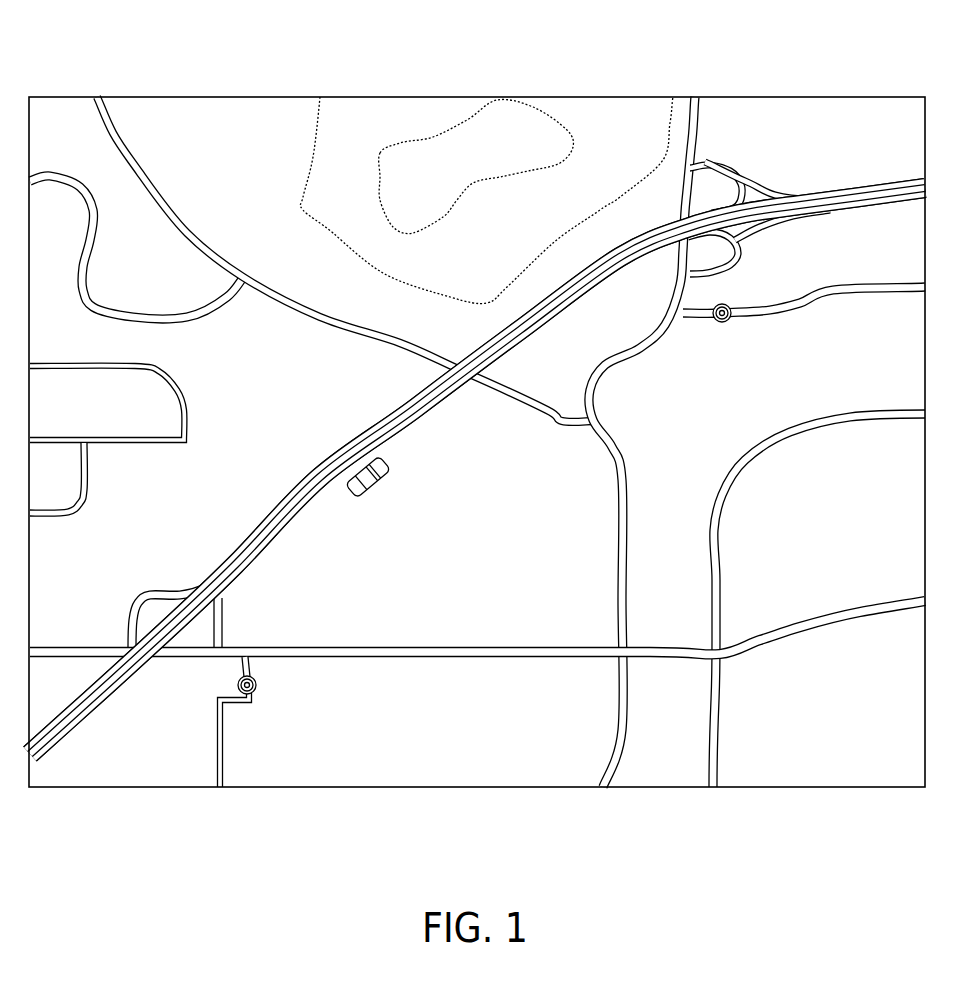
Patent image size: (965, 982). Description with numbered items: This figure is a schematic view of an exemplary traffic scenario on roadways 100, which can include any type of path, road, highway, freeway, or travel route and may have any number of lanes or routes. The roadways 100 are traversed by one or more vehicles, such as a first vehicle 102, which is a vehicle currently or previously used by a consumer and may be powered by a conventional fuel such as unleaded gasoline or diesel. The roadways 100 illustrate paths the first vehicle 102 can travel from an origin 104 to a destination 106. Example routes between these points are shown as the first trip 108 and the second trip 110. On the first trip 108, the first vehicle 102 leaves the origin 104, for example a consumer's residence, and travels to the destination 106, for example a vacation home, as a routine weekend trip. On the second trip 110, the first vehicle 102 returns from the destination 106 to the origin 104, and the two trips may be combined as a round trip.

The roadways 100 is at (114, 48).
The first vehicle 102 is at (371, 489).
The origin 104 is at (258, 684).
The destination 106 is at (723, 322).
The first trip 108 is at (304, 527).
The second trip 110 is at (262, 525).